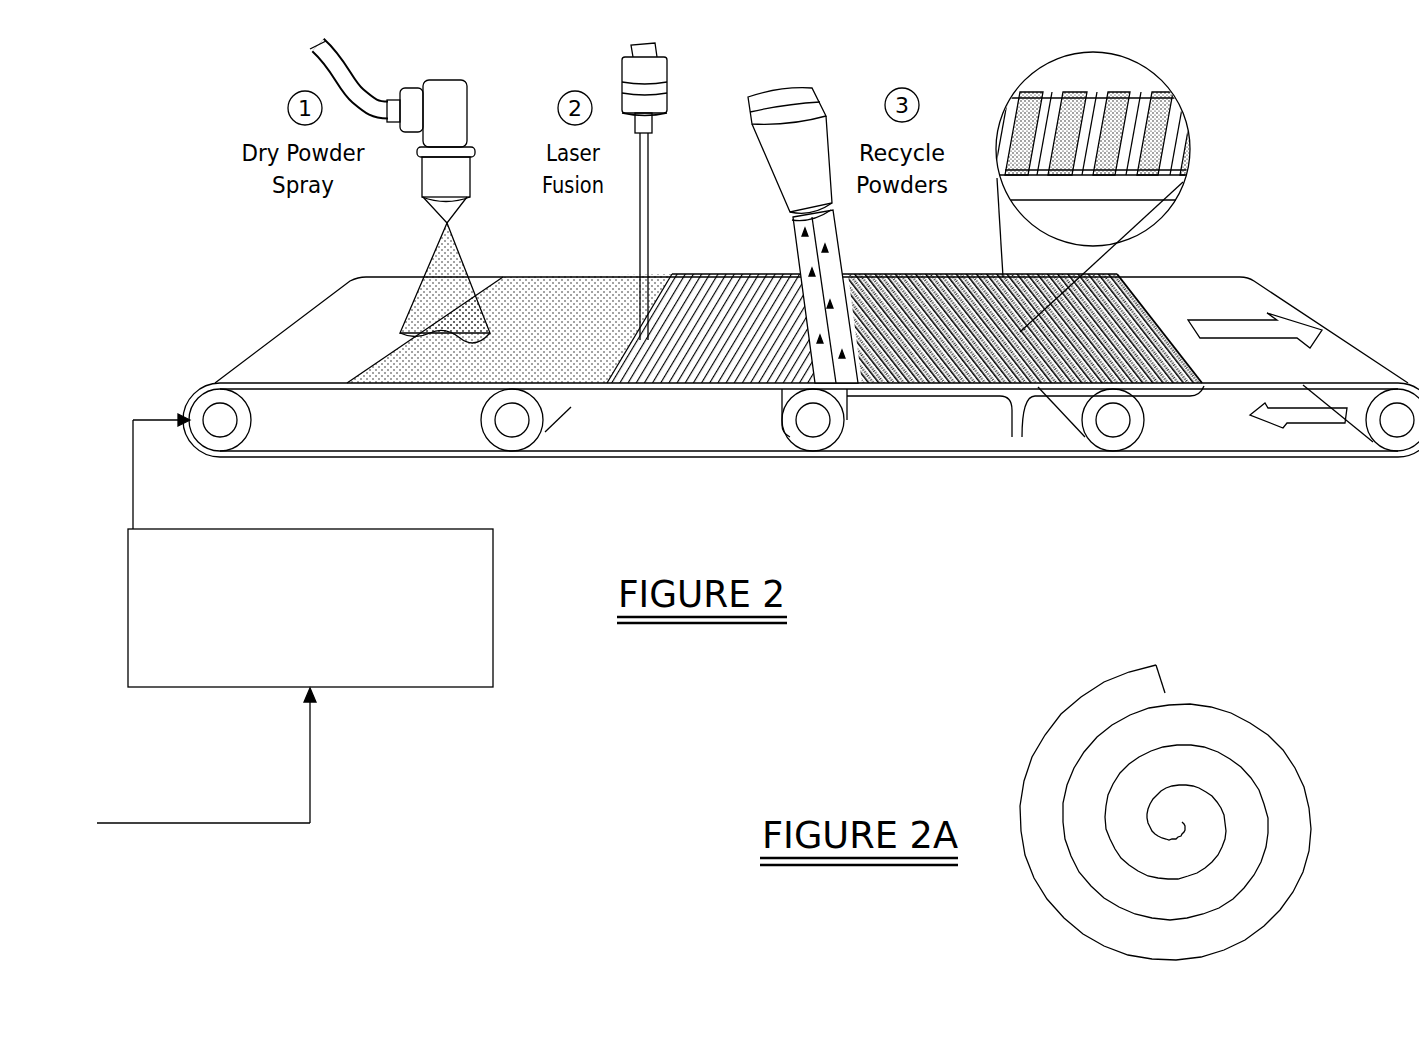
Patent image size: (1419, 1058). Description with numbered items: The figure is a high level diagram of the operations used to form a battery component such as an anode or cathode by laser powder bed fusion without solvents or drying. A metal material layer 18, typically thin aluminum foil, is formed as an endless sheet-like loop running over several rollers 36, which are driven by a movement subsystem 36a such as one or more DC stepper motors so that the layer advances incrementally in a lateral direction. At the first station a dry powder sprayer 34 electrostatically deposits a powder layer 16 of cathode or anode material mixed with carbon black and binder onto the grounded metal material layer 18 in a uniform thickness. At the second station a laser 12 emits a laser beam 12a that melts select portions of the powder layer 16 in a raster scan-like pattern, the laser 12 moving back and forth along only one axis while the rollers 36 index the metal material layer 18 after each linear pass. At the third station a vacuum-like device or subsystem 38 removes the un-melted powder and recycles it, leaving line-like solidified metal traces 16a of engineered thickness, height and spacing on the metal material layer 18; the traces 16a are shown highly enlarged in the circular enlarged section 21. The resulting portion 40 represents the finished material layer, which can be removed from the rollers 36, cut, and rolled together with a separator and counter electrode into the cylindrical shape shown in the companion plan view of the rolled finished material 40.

In FIG. 2, the laser 12 is at (668, 87).
In FIG. 2, the laser beam 12a is at (650, 227).
In FIG. 2, the powder layer 16 is at (513, 297).
In FIG. 2, the solidified metal traces 16a is at (952, 290).
In FIG. 2, the metal material layer 18 is at (1228, 297).
In FIG. 2, the enlarged section 21 is at (1192, 157).
In FIG. 2, the dry powder sprayer 34 is at (438, 187).
In FIG. 2, the rollers 36 is at (267, 418).
In FIG. 2, the movement subsystem 36a is at (291, 679).
In FIG. 2, the vacuum-like device or subsystem 38 is at (795, 112).
In FIG. 2, the finished material layer 40 is at (1013, 418).
In FIG. 2A, the finished material layer 40 is at (1262, 675).